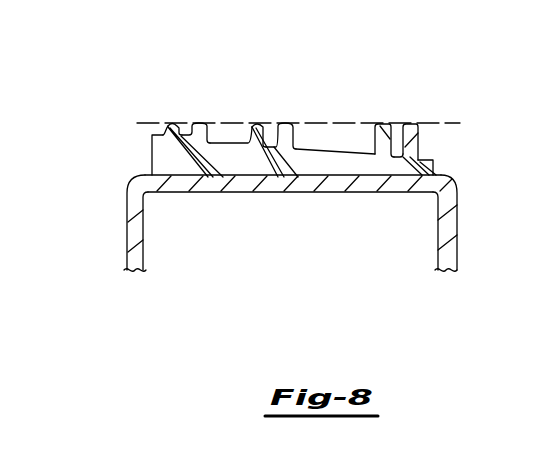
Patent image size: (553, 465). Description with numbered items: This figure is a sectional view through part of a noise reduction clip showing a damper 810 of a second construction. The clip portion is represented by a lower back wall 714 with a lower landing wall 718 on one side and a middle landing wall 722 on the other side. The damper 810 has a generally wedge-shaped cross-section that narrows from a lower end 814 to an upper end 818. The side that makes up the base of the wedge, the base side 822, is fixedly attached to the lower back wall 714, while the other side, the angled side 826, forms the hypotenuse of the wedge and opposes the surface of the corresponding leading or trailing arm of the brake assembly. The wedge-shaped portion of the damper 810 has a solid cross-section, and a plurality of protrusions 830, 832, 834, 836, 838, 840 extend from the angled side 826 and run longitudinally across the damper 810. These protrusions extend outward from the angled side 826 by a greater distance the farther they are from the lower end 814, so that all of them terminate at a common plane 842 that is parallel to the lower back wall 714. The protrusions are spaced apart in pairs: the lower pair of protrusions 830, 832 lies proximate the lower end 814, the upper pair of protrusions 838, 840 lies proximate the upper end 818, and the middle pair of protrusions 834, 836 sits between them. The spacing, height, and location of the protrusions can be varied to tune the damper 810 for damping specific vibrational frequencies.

The lower back wall 714 is at (300, 193).
The lower landing wall 718 is at (130, 237).
The middle landing wall 722 is at (438, 230).
The damper 810 is at (152, 163).
The lower end 814 is at (150, 142).
The upper end 818 is at (432, 166).
The base side 822 is at (212, 193).
The angled side 826 is at (318, 149).
The protrusion 830 is at (168, 125).
The protrusion 832 is at (198, 124).
The protrusion 834 is at (256, 123).
The protrusion 836 is at (284, 123).
The protrusion 838 is at (378, 123).
The protrusion 840 is at (410, 128).
The plane 842 is at (448, 121).